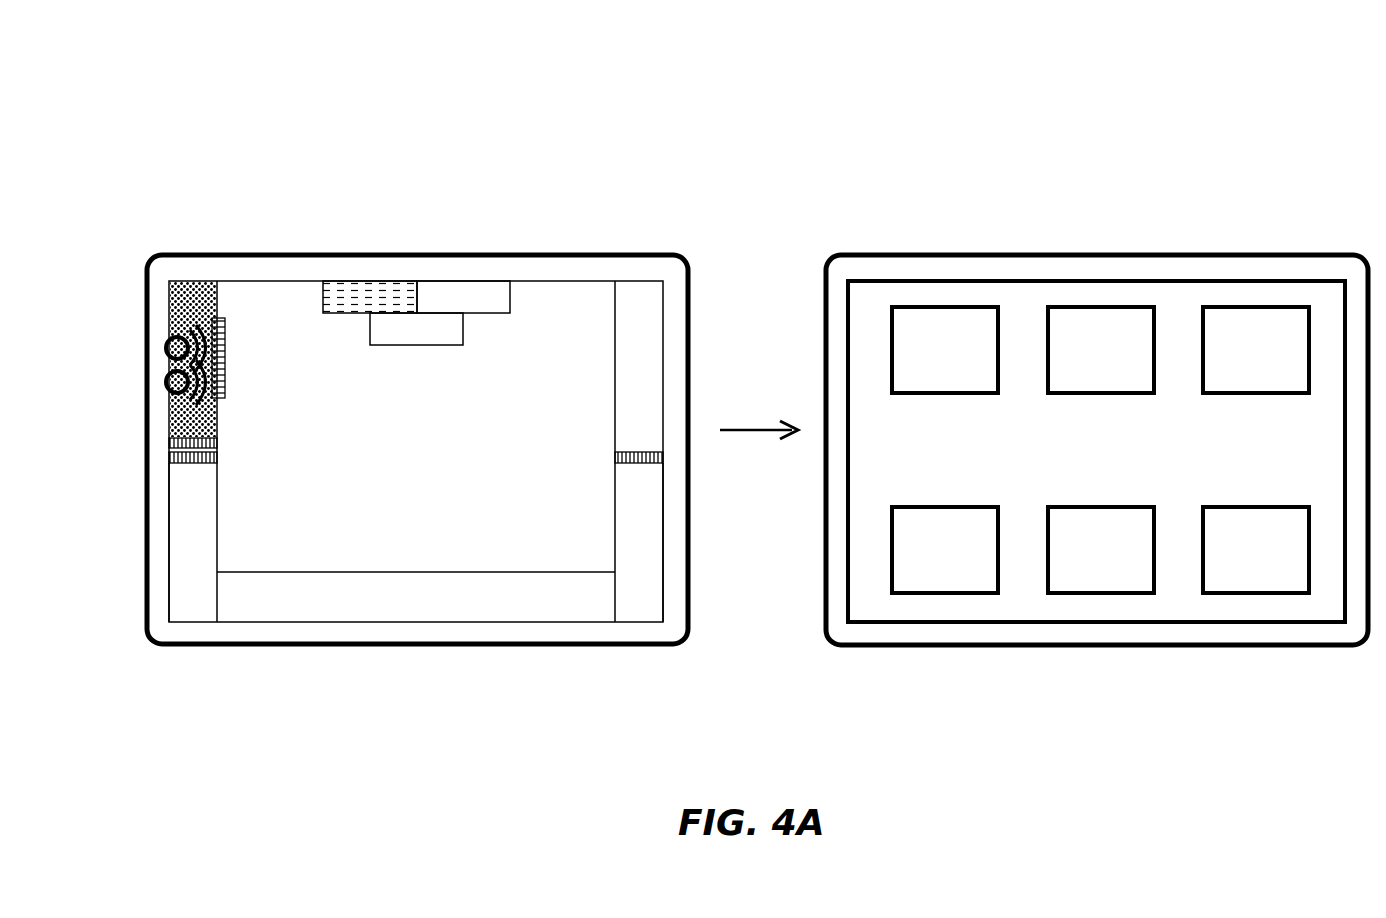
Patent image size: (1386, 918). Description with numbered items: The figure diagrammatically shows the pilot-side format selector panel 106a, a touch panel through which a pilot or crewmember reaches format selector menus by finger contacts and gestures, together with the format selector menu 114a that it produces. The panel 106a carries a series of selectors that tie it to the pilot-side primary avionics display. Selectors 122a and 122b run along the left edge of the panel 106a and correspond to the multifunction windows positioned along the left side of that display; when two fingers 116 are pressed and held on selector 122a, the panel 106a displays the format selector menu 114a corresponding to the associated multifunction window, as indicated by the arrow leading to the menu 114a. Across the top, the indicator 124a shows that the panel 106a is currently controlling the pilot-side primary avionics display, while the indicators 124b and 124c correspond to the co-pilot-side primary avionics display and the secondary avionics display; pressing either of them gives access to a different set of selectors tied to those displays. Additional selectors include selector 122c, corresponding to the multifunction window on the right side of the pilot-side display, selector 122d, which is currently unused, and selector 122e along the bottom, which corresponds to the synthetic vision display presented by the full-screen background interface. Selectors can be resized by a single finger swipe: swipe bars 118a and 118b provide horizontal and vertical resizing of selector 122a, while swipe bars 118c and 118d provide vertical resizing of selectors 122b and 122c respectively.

The pilot-side format selector panel 106a is at (158, 81).
The format selector menu 114a is at (933, 278).
The fingers 116 is at (165, 378).
The swipe bar 118a is at (225, 350).
The swipe bar 118b is at (218, 441).
The swipe bar 118c is at (195, 462).
The swipe bar 118d is at (615, 455).
The selector 122a is at (193, 281).
The selector 122b is at (193, 597).
The selector 122c is at (630, 298).
The selector 122d is at (636, 535).
The selector 122e is at (395, 603).
The indicator 124a is at (372, 281).
The indicator 124b is at (452, 288).
The indicator 124c is at (418, 345).